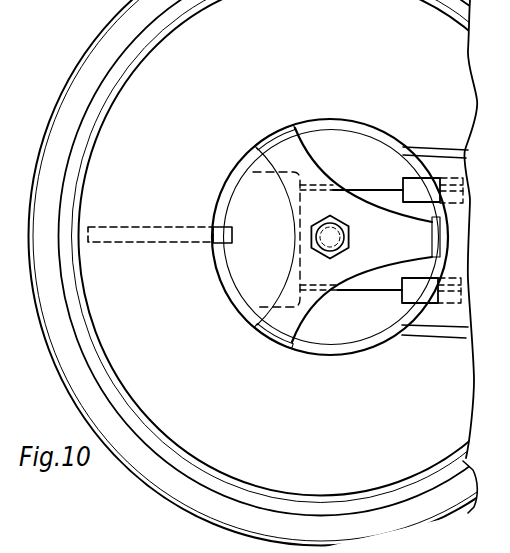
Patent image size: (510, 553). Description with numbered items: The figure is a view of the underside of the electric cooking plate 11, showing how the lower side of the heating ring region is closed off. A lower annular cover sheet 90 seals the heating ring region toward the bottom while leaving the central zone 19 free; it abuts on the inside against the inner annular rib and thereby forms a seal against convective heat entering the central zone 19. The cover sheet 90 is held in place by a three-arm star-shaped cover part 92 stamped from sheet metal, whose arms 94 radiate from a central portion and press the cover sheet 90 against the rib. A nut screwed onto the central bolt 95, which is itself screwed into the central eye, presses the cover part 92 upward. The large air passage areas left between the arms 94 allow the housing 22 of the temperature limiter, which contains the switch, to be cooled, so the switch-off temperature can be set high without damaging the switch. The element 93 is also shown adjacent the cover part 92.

The electric cooking plate 11 is at (118, 473).
The central zone 19 is at (340, 152).
The housing of the temperature limiter 22 is at (253, 263).
The cover sheet 90 is at (231, 378).
The cover part 92 is at (328, 184).
The lower retaining clip 93 is at (340, 265).
The arms 94 is at (290, 324).
The central bolt 95 is at (348, 239).